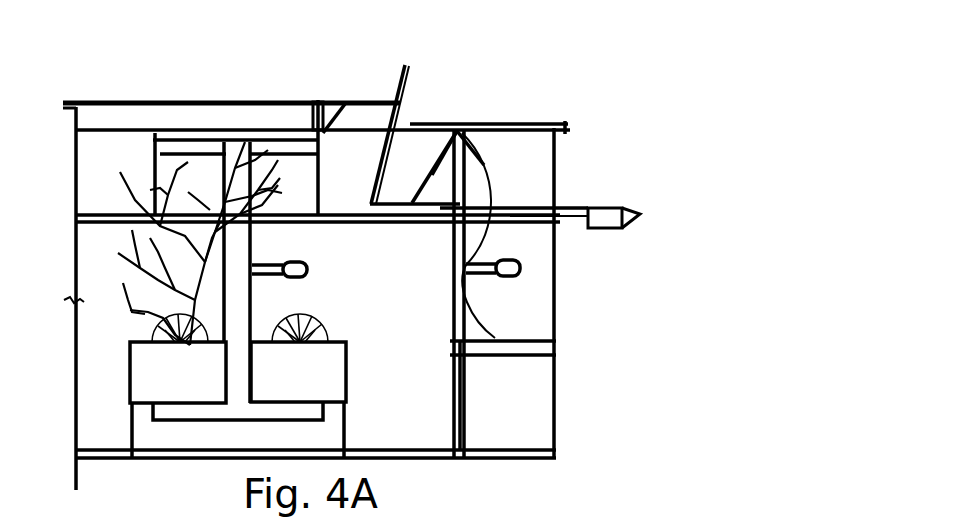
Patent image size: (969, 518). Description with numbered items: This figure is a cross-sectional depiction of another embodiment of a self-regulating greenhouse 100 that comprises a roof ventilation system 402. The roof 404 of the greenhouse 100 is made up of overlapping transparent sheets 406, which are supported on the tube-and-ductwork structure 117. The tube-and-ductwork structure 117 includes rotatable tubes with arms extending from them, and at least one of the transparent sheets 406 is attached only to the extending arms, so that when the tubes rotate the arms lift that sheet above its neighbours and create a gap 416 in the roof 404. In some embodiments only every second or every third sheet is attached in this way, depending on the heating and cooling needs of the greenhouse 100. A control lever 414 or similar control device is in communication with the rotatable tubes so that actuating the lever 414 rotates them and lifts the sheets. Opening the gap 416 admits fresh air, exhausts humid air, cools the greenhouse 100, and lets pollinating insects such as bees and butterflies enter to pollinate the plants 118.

The greenhouse 100 is at (568, 55).
The tube-and-ductwork structure 117 is at (157, 133).
The plants 118 is at (117, 143).
The roof ventilation system 402 is at (436, 45).
The roof 404 is at (321, 102).
The transparent sheets 406 is at (628, 509).
The control lever 414 is at (648, 214).
The gap 416 is at (118, 116).